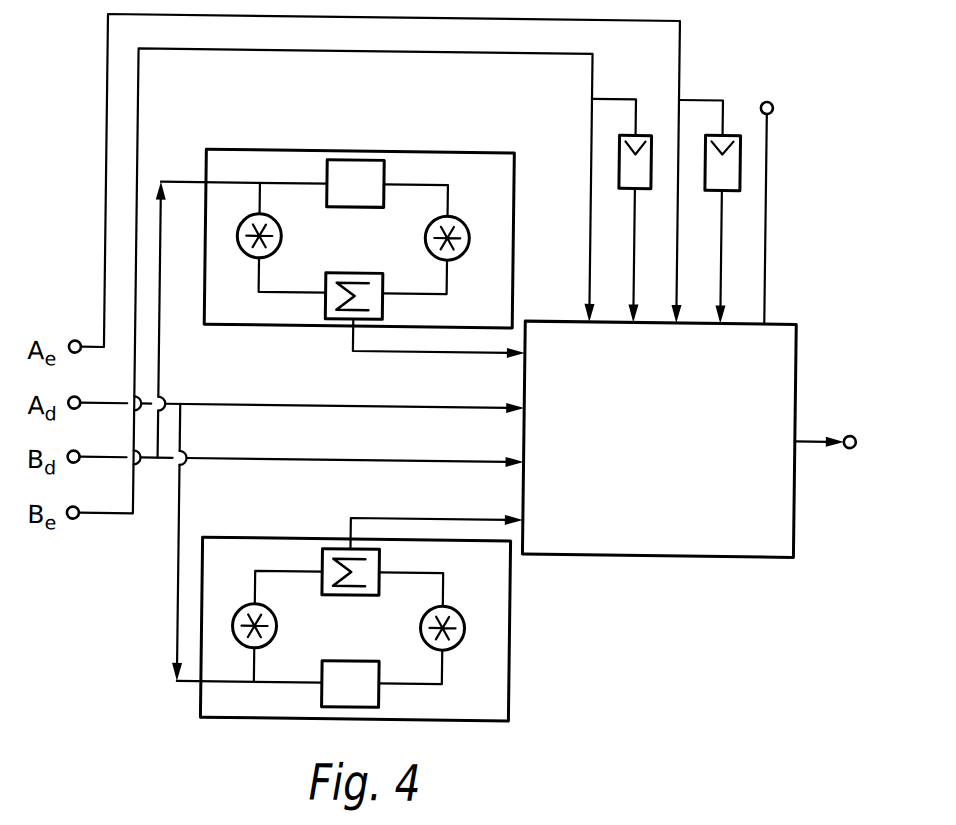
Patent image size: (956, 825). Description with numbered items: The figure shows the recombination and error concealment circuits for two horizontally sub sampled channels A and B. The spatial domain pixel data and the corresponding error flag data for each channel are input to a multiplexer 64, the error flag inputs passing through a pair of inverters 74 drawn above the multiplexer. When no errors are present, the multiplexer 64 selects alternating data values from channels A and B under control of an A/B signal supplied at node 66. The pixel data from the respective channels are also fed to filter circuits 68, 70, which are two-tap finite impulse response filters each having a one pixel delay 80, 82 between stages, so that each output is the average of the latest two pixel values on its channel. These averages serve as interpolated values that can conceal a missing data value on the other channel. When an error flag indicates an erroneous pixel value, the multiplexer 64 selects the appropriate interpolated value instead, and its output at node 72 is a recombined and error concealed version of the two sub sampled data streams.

The multiplexer 64 is at (675, 549).
The node 66 is at (769, 94).
The filter circuit 68 is at (343, 217).
The filter circuit 70 is at (385, 652).
The node 72 is at (852, 427).
The inverters 74 is at (708, 150).
The one pixel delay 80 is at (386, 169).
The one pixel delay 82 is at (386, 700).